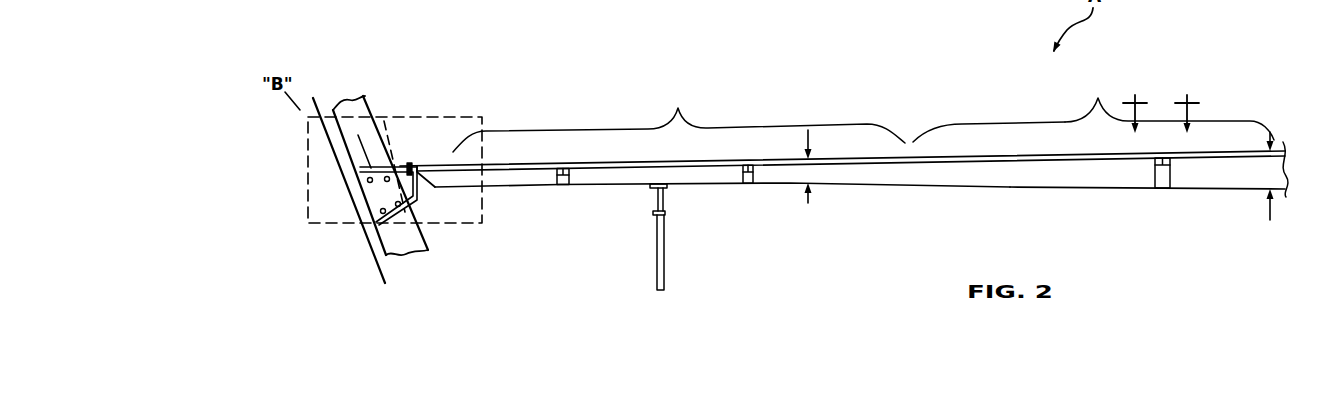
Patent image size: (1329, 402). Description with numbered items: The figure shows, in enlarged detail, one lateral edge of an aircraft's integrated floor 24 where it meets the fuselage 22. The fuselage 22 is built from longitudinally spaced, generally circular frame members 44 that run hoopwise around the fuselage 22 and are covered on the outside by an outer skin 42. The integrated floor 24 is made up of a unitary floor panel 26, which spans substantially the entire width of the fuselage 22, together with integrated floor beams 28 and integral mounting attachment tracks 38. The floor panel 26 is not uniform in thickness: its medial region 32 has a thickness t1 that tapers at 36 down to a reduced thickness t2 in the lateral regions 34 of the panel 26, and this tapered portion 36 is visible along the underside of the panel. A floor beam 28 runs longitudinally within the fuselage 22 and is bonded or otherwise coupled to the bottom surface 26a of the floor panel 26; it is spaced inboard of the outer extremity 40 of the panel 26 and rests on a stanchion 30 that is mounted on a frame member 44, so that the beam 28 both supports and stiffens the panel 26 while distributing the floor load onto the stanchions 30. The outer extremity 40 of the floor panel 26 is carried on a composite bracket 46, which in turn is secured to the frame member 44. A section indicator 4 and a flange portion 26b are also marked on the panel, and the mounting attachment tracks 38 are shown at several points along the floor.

The fuselage 22 is at (330, 167).
The outer skin 42 is at (355, 227).
The frame member 44 is at (358, 135).
The composite bracket 46 is at (418, 192).
The outer extremity of the floor panel 40 is at (412, 142).
The integrated floor 24 is at (733, 76).
The floor panel 26 is at (524, 148).
The bottom surface of the floor panel 26a is at (852, 190).
The beam flange portion 26b is at (958, 141).
The taper 36 is at (1027, 193).
The lateral region 34 is at (679, 119).
The medial region 32 is at (1169, 108).
The integral mounting attachment track 38 is at (563, 168).
The section line 4 is at (1195, 91).
The integrated floor beam 28 is at (663, 197).
The stanchion 30 is at (664, 247).